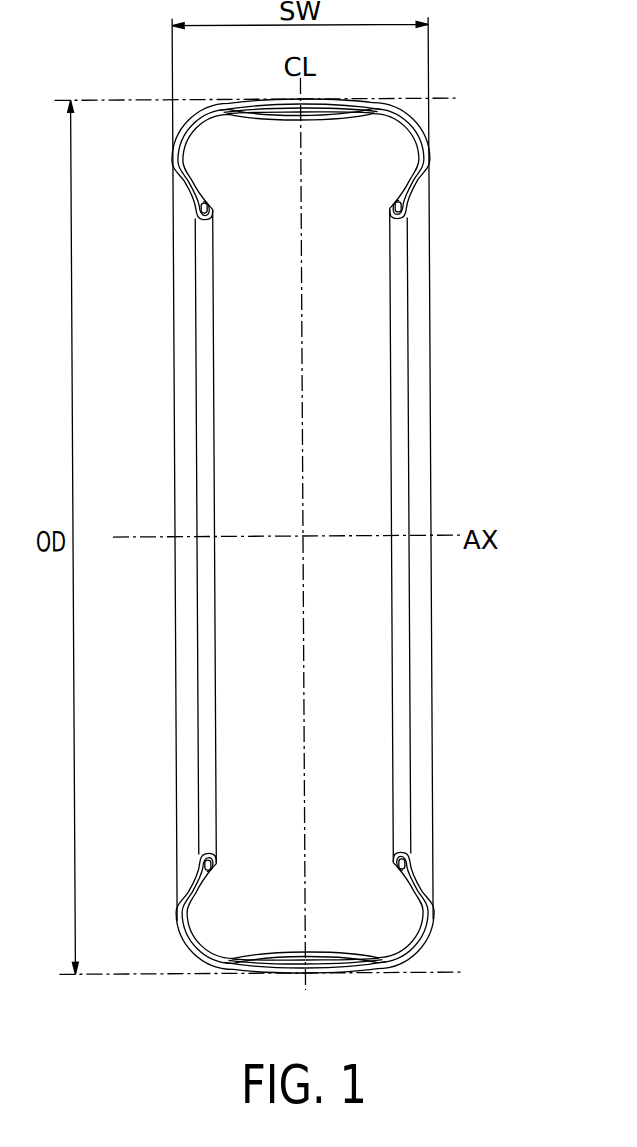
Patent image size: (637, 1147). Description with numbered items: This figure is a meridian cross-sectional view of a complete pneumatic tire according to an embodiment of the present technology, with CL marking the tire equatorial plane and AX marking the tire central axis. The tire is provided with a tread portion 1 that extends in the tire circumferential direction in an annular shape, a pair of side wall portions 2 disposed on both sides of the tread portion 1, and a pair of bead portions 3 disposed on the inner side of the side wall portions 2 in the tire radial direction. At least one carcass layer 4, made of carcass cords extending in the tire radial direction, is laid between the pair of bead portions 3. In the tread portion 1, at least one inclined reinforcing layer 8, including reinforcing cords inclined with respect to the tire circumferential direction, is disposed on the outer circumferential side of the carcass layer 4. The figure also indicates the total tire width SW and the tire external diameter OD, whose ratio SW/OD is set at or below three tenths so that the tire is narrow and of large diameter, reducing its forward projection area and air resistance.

The tread portion 1 is at (330, 95).
The side wall portions 2 is at (169, 153).
The bead portions 3 is at (184, 203).
The carcass layer 4 is at (430, 142).
The inclined reinforcing layer 8 is at (368, 106).